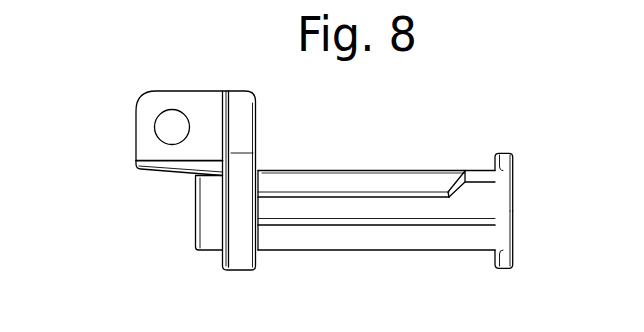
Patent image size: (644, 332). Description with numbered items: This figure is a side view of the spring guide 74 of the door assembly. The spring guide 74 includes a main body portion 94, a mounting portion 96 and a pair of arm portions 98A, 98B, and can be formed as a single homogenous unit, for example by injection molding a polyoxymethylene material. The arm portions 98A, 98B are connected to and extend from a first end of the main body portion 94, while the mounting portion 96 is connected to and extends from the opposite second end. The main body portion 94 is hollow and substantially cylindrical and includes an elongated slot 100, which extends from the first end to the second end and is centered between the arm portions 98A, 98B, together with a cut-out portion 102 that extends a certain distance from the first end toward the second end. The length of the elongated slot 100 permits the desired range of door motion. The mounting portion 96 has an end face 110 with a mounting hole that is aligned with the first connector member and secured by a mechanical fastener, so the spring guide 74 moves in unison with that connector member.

The spring guide 74 is at (323, 137).
The main body portion 94 is at (413, 250).
The mounting portion 96 is at (240, 271).
The arm portion 98A is at (515, 163).
The arm portion 98B is at (515, 257).
The elongated slot 100 is at (333, 211).
The cut-out portion 102 is at (455, 191).
The end face 110 is at (166, 127).